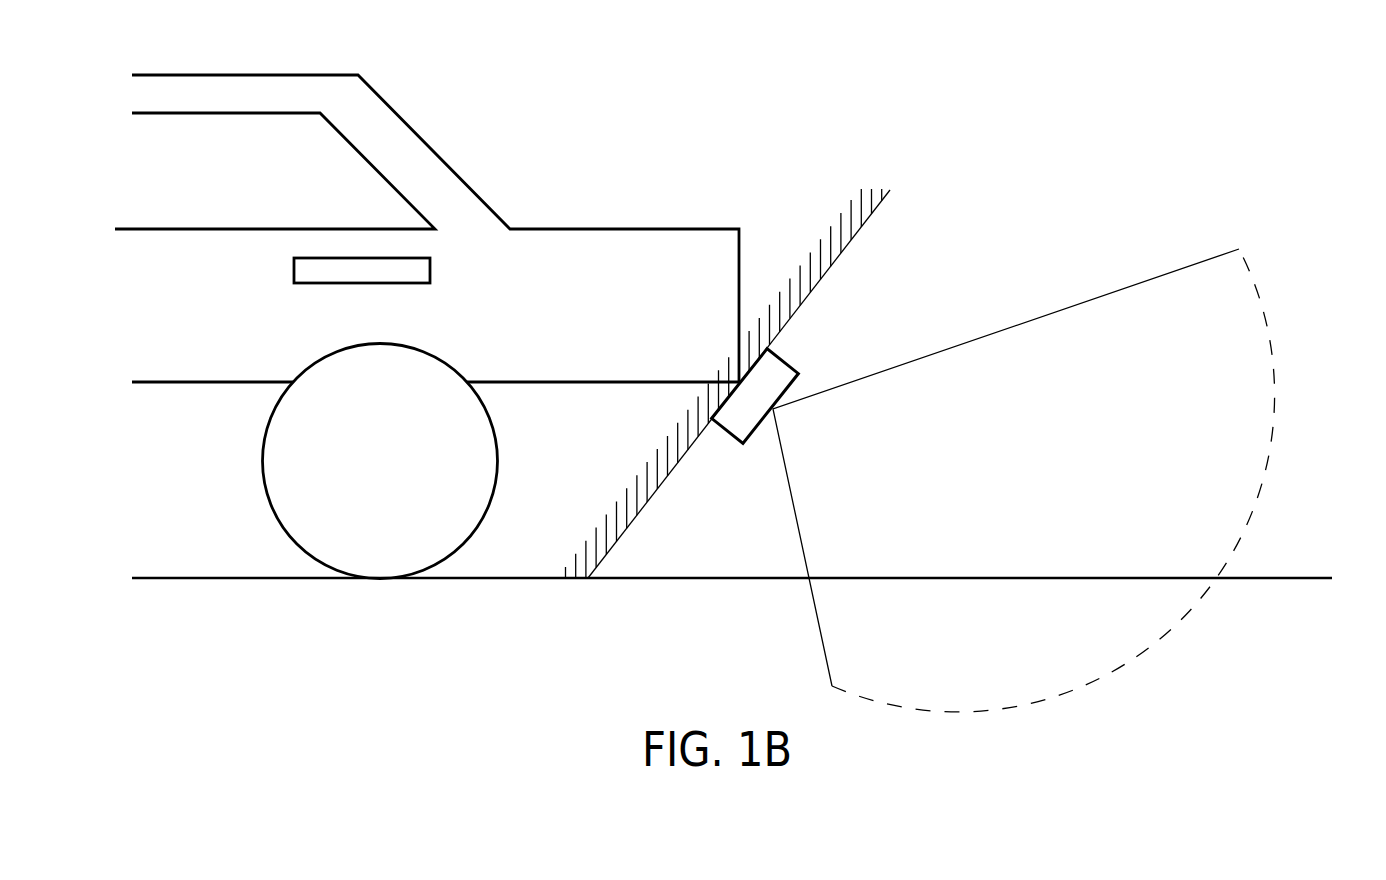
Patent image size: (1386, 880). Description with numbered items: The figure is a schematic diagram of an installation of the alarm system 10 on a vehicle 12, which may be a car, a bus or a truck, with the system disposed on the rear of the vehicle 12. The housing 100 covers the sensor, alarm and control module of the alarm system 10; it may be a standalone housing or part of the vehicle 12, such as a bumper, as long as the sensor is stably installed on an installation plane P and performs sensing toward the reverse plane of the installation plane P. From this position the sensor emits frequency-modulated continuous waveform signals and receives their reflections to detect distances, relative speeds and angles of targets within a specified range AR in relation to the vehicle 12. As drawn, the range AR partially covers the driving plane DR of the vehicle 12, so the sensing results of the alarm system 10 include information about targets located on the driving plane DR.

The vehicle 12 is at (322, 74).
The housing 100 is at (783, 360).
The alarm system 10 is at (767, 408).
The installation plane P is at (831, 266).
The range AR is at (1215, 255).
The driving plane DR is at (1298, 578).